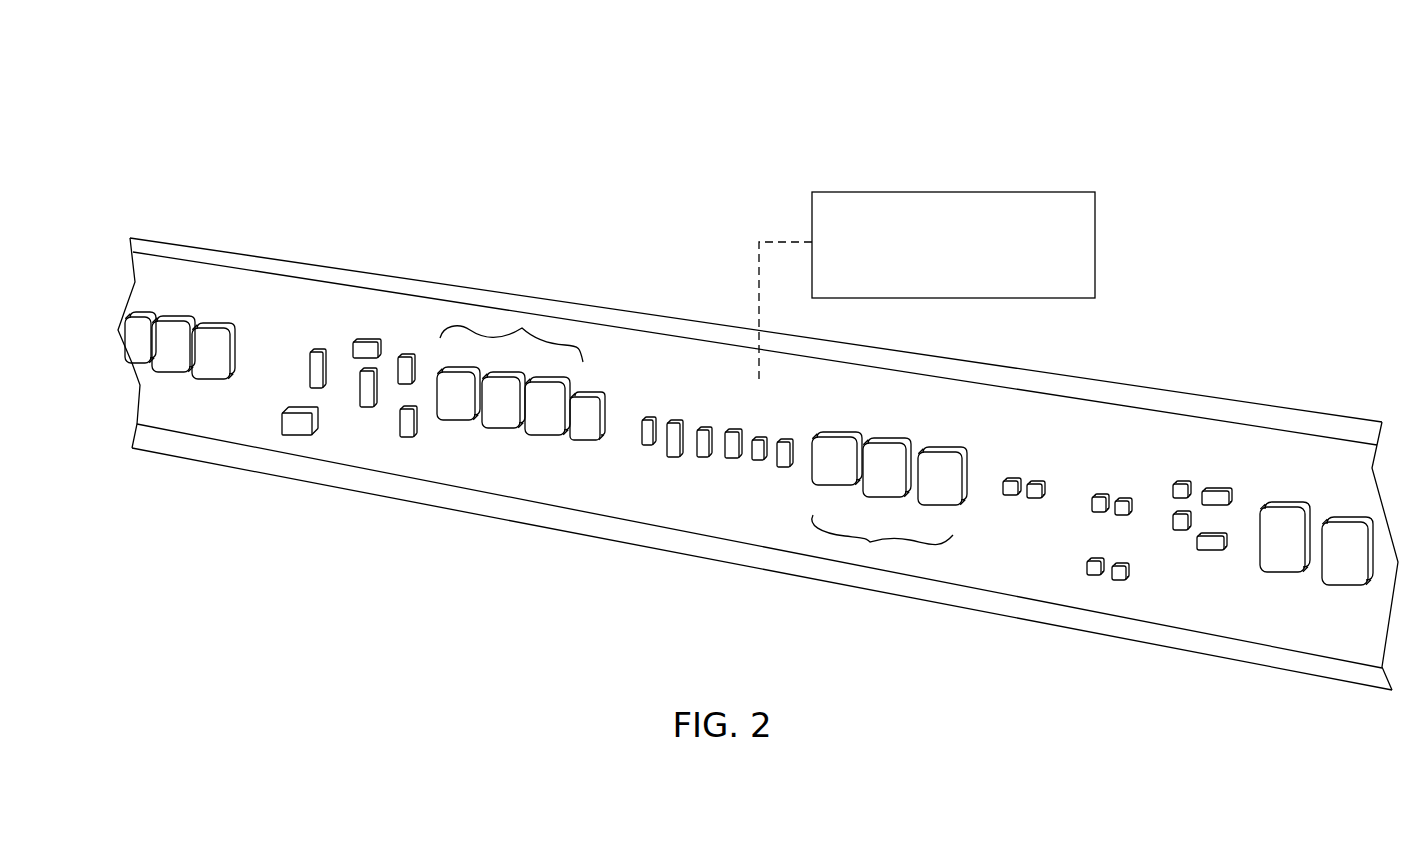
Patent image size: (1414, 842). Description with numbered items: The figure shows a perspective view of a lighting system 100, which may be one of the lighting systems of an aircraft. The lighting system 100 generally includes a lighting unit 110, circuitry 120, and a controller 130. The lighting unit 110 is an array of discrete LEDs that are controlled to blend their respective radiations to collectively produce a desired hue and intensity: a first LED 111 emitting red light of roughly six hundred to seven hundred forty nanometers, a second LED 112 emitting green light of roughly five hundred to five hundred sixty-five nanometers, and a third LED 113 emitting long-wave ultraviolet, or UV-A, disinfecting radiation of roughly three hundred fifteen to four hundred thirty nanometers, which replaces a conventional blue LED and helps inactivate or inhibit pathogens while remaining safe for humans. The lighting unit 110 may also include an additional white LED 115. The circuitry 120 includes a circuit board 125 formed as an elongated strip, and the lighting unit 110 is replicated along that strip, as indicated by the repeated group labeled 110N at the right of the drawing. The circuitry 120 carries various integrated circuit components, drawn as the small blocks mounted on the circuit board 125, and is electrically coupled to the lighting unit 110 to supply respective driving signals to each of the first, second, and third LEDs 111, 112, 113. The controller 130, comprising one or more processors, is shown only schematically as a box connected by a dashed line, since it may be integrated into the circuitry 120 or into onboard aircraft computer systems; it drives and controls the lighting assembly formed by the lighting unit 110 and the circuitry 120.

The lighting system 100 is at (283, 122).
The lighting unit 110 is at (522, 328).
The first LED 111 is at (457, 403).
The second LED 112 is at (502, 413).
The third LED 113 is at (548, 422).
The white LED 115 is at (598, 413).
The circuitry 120 is at (372, 300).
The circuit board 125 is at (600, 483).
The controller 130 is at (938, 258).
The Nth light emitting diode group 110N is at (870, 542).